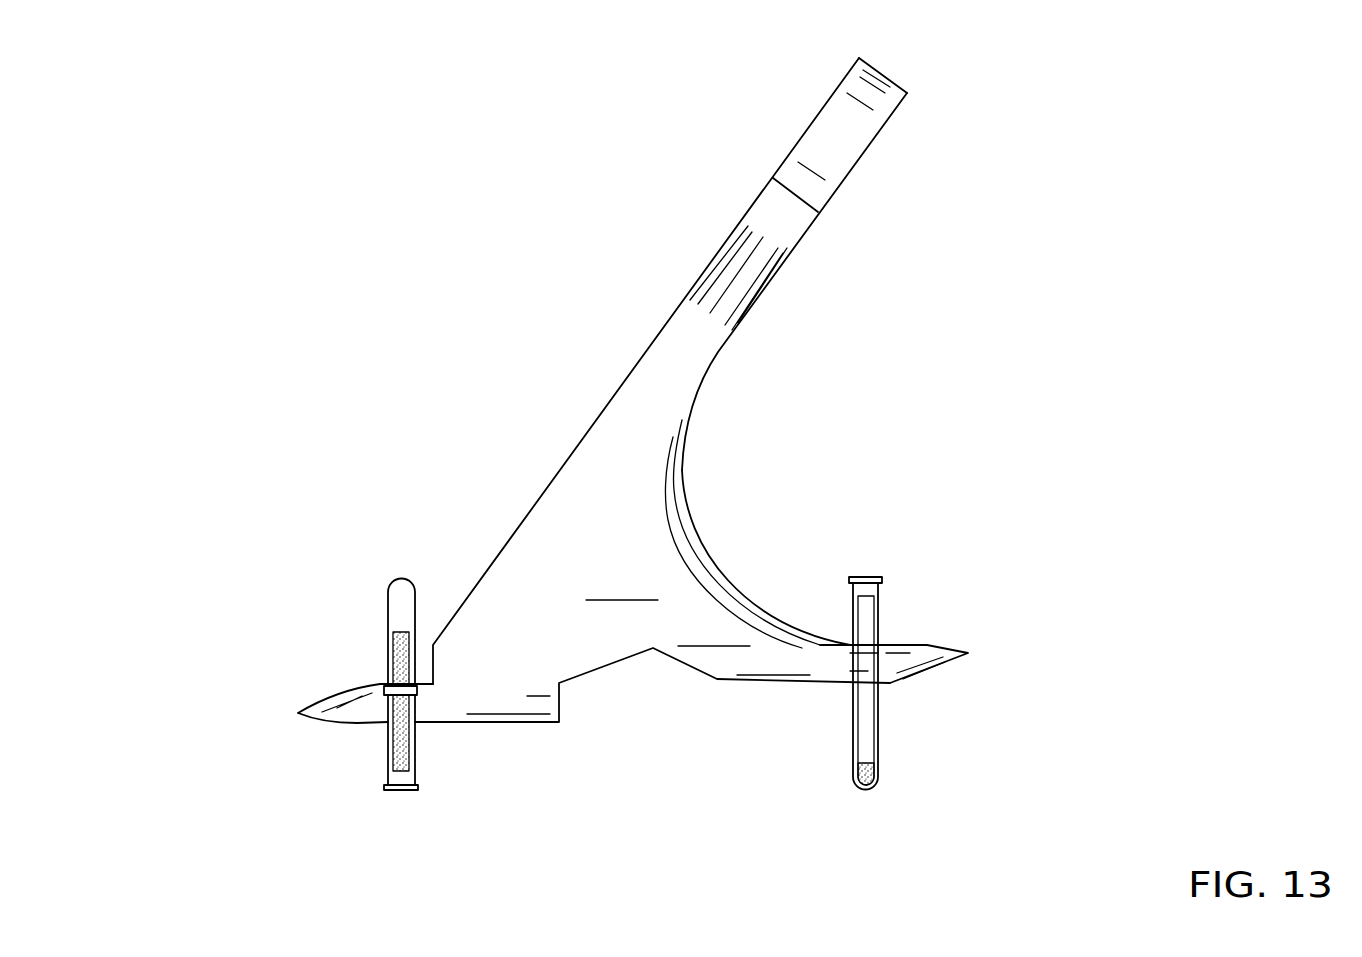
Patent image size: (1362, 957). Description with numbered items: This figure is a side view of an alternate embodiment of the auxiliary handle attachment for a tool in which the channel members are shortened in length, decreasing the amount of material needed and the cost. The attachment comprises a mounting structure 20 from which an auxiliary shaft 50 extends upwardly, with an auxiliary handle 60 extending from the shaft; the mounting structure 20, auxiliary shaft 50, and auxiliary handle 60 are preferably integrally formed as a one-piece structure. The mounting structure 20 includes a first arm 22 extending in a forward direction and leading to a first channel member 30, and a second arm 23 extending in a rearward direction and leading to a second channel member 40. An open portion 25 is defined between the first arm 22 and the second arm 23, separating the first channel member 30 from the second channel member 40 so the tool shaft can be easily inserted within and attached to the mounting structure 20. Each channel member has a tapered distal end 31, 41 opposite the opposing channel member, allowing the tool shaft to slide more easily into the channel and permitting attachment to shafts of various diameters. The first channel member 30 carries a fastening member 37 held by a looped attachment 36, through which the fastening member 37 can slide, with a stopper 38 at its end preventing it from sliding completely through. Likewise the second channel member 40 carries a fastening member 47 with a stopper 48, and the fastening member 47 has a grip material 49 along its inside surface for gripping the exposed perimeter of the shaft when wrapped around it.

The mounting structure 20 is at (572, 350).
The first arm 22 is at (502, 600).
The second arm 23 is at (710, 617).
The open portion 25 is at (630, 700).
The first channel member 30 is at (349, 764).
The tapered distal end 31 is at (320, 700).
The looped attachment 36 is at (387, 692).
The fastening member 37 is at (390, 580).
The stopper 38 is at (405, 793).
The second channel member 40 is at (978, 587).
The tapered distal end 41 is at (950, 670).
The fastening member 47 is at (867, 580).
The stopper 48 is at (880, 779).
The grip material 49 is at (868, 620).
The auxiliary shaft 50 is at (660, 327).
The auxiliary handle 60 is at (883, 73).